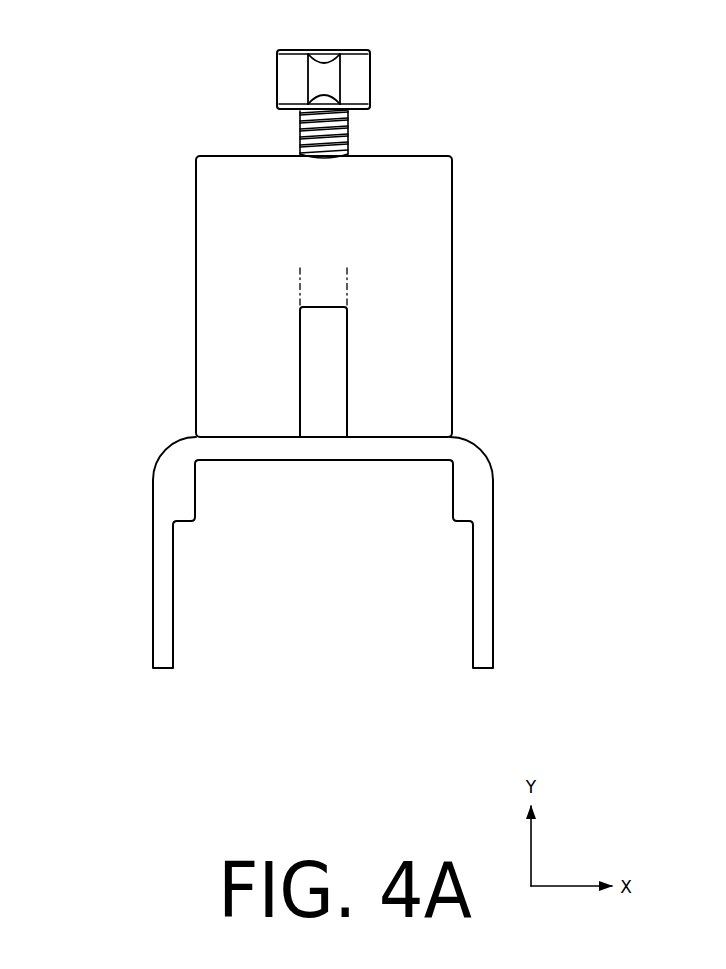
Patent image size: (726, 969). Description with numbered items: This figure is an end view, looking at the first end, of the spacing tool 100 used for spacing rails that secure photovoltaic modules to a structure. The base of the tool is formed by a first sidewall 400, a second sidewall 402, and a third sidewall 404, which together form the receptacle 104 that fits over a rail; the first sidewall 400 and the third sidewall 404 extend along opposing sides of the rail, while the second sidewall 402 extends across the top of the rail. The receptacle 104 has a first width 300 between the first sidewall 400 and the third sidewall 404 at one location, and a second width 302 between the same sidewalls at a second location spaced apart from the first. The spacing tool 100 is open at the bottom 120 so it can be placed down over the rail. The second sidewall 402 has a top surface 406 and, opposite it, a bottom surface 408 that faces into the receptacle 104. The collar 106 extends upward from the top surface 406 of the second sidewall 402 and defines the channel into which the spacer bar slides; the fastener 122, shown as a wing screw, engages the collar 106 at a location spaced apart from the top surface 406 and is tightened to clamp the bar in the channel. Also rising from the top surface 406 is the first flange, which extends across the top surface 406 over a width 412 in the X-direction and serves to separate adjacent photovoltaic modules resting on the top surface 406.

The spacing tool 100 is at (137, 84).
The fastener 122 is at (358, 77).
The collar 106 is at (437, 194).
The width 412 is at (400, 265).
The receptacle 104 is at (325, 692).
The second sidewall 402 is at (186, 447).
The top surface 406 is at (402, 437).
The bottom surface 408 is at (435, 437).
The first sidewall 400 is at (163, 640).
The third sidewall 404 is at (483, 650).
The first width 300 is at (100, 481).
The second width 302 is at (77, 580).
The bottom 120 is at (225, 706).